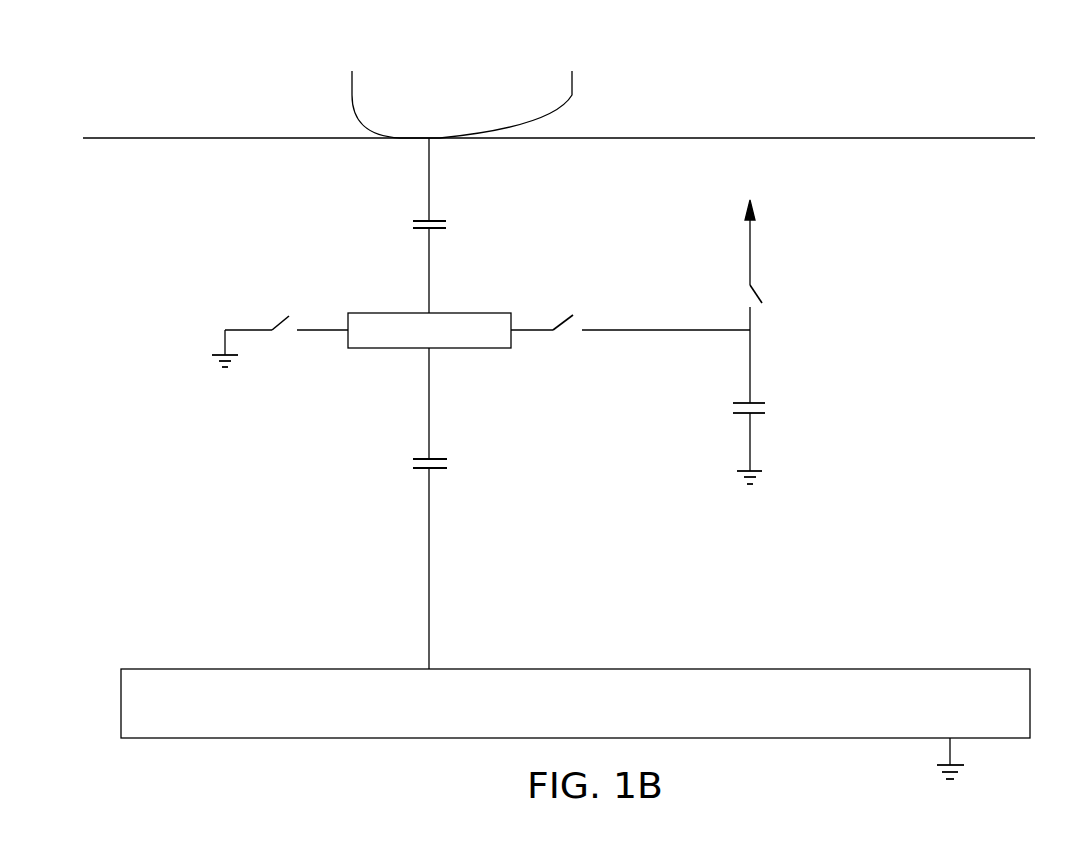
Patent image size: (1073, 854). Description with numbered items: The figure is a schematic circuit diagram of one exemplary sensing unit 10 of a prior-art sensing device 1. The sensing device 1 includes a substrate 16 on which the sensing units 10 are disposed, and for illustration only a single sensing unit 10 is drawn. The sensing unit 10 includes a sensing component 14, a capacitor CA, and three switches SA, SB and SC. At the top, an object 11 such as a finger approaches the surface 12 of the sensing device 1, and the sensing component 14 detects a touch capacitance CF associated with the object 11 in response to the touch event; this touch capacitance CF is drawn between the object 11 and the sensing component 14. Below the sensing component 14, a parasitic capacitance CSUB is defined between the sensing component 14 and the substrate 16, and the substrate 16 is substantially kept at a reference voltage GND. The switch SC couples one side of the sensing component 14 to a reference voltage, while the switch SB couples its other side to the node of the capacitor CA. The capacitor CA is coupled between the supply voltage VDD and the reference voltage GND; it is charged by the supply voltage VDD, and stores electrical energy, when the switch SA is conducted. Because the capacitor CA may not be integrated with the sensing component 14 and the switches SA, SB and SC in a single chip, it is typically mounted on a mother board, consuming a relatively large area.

The sensing device 1 is at (82, 98).
The sensing unit 10 is at (180, 188).
The object 11 is at (572, 88).
The touch surface 12 is at (800, 137).
The sensing component 14 is at (494, 342).
The substrate 16 is at (1011, 724).
The touch capacitance CF is at (447, 223).
The capacitance Csub CSUB is at (448, 463).
The capacitor CA is at (766, 408).
The switch SA is at (764, 296).
The switch SB is at (576, 312).
The switch SC is at (292, 312).
The supply voltage VDD is at (747, 233).
The reference voltage GND is at (748, 464).